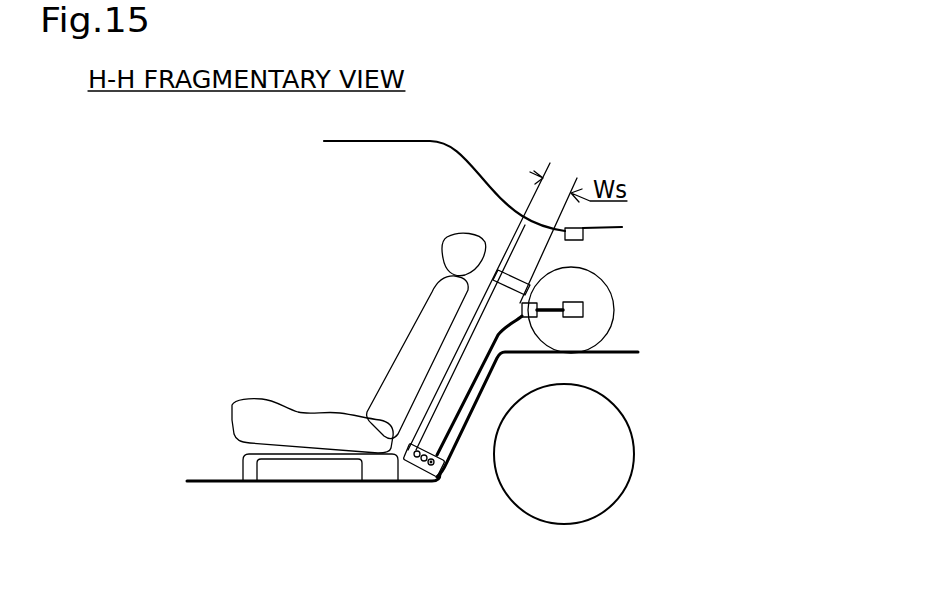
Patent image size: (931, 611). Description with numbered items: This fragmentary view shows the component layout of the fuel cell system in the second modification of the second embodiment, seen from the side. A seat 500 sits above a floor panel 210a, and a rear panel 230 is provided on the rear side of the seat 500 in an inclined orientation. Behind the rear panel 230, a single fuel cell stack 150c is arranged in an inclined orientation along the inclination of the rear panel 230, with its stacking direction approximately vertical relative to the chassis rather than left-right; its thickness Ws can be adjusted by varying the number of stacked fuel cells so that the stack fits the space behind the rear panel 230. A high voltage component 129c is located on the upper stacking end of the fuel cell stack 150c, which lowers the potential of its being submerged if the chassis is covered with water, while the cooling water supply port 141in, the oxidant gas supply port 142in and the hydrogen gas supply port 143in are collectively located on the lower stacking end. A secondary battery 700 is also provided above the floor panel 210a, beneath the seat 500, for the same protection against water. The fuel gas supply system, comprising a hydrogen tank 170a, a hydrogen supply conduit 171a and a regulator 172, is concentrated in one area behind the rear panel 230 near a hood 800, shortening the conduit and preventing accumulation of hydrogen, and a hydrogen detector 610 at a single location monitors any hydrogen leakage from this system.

The rear panel 230 is at (508, 237).
The high voltage component 129c is at (496, 275).
The seat 500 is at (400, 345).
The fuel cell stack 150c is at (443, 455).
The secondary battery 700 is at (248, 476).
The floor panel 210a is at (205, 482).
The oxidant gas supply port 142in is at (405, 460).
The cooling water supply port 141in is at (431, 463).
The hydrogen gas supply port 143in is at (446, 472).
The hood 800 is at (632, 475).
The regulator 172 is at (528, 318).
The hydrogen tank 170a is at (615, 310).
The hydrogen supply conduit 171a is at (562, 303).
The hydrogen detector 610 is at (583, 236).